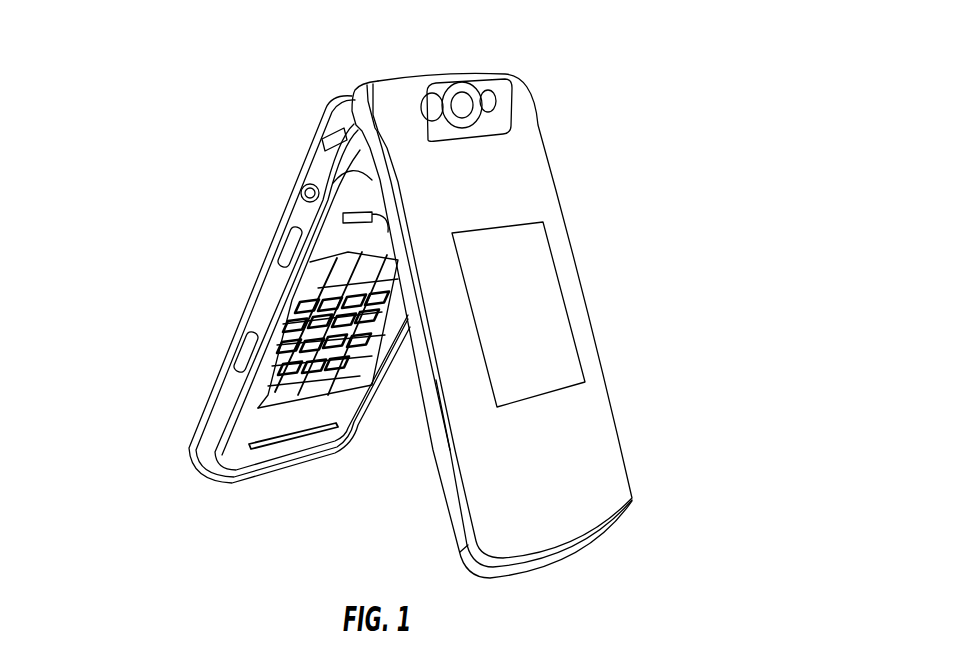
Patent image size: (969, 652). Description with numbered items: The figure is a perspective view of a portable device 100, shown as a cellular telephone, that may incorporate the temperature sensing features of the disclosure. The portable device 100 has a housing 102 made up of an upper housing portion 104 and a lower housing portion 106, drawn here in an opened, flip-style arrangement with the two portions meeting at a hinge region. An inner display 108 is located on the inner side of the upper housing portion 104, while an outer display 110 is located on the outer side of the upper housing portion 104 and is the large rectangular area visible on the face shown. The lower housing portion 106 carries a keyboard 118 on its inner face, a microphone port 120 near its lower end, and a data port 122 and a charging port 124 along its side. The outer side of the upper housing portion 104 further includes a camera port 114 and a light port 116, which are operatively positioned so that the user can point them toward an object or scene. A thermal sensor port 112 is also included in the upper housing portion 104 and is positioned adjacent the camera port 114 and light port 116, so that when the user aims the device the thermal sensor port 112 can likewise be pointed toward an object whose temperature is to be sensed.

The portable device 100 is at (366, 294).
The housing 102 is at (548, 132).
The upper housing portion 104 is at (435, 455).
The lower housing portion 106 is at (260, 272).
The inner display 108 is at (420, 396).
The outer display 110 is at (557, 268).
The thermal sensor port 112 is at (507, 101).
The camera port 114 is at (440, 75).
The light port 116 is at (418, 80).
The keyboard 118 is at (290, 340).
The microphone port 120 is at (262, 452).
The data port 122 is at (309, 184).
The charging port 124 is at (305, 246).